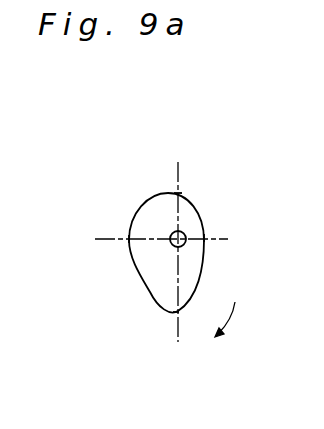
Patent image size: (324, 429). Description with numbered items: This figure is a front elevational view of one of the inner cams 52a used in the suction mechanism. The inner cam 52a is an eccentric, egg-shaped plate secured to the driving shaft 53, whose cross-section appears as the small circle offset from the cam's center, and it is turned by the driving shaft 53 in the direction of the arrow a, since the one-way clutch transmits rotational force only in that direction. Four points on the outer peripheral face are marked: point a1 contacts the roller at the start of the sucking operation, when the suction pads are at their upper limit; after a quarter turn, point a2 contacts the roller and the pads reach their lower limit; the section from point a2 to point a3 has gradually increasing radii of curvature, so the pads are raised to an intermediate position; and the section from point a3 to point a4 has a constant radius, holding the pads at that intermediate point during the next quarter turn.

The inner cam 52a is at (137, 277).
The driving shaft 53 is at (184, 245).
The arrow a is at (232, 323).
The point a1 is at (175, 313).
The point a2 is at (204, 236).
The point a3 is at (178, 193).
The point a4 is at (130, 241).